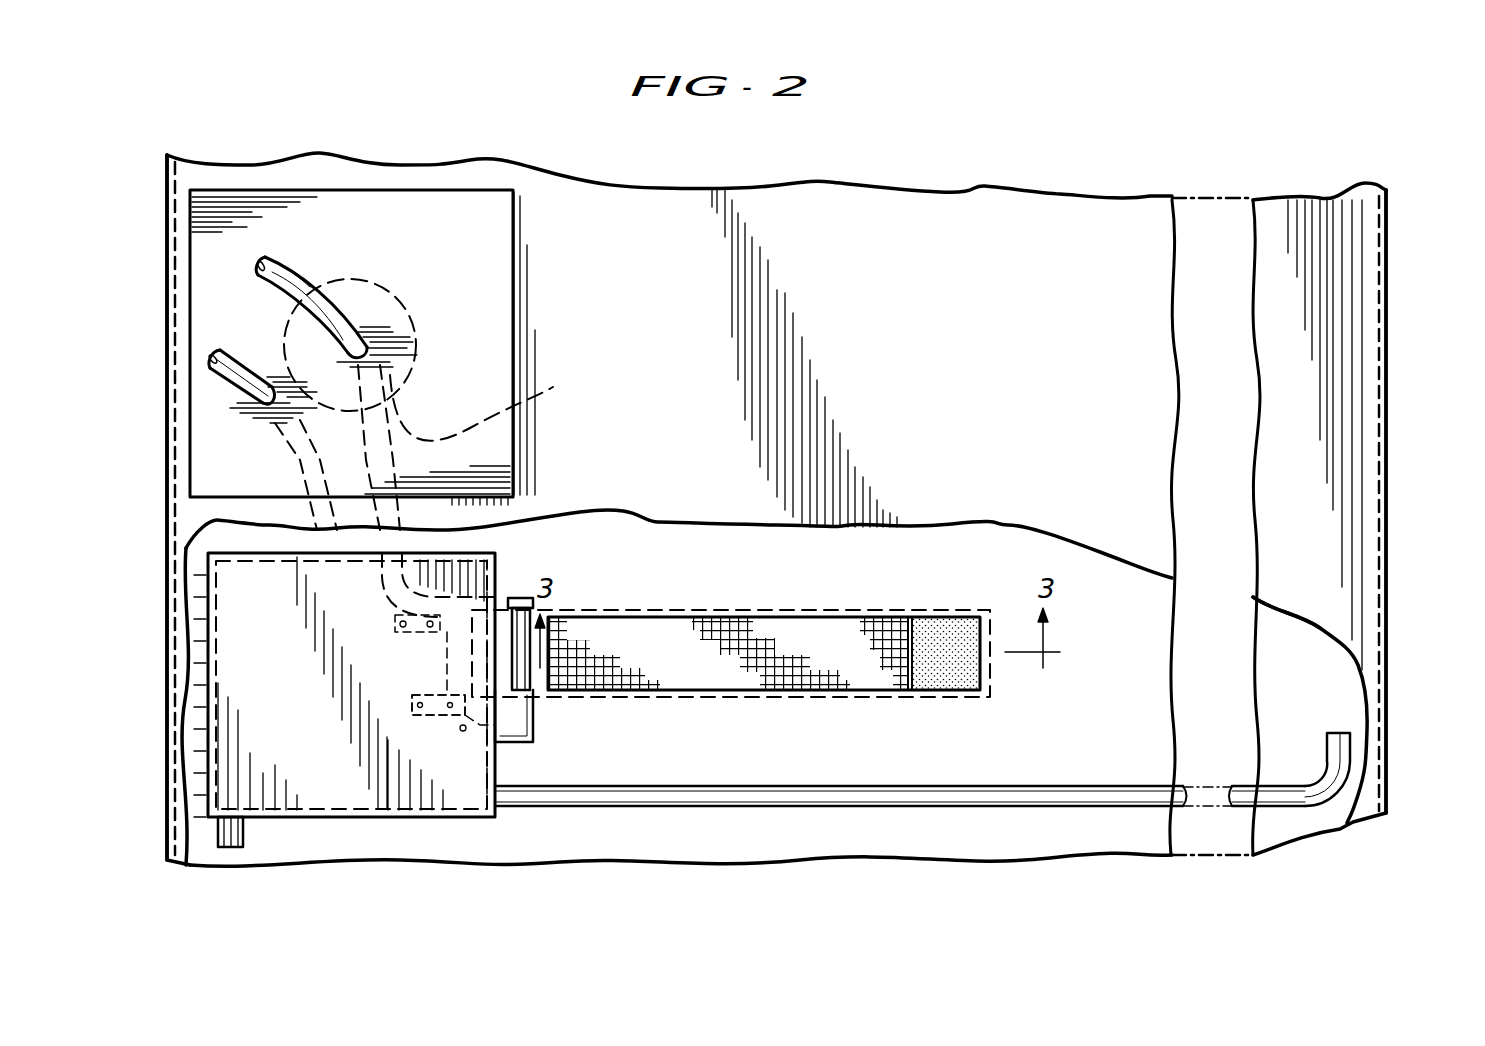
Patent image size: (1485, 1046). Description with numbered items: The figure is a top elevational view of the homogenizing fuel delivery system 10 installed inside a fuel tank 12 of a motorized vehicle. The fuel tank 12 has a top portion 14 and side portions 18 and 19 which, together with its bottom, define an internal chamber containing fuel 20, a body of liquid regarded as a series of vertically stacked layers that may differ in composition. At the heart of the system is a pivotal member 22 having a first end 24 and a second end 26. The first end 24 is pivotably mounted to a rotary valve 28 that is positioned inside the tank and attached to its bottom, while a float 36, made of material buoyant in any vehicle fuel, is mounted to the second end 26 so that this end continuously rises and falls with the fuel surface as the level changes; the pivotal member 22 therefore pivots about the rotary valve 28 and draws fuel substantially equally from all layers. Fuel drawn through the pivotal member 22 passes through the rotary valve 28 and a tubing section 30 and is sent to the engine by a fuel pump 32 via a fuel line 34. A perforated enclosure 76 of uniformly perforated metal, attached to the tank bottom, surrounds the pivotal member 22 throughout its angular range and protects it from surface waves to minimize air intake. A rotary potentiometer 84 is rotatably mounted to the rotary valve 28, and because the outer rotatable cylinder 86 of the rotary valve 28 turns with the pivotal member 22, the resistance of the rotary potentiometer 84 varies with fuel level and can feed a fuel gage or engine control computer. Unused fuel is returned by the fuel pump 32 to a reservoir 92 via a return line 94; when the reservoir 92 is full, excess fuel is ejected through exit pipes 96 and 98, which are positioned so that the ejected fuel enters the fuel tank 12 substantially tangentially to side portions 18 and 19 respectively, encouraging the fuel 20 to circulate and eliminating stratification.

The homogenizing fuel delivery system 10 is at (557, 812).
The fuel tank 12 is at (1391, 510).
The top portion 14 is at (1047, 213).
The side portion 18 is at (166, 562).
The side portion 19 is at (1387, 622).
The fuel 20 is at (1343, 691).
The pivotal member 22 is at (737, 695).
The first end 24 is at (568, 692).
The second end 26 is at (897, 692).
The rotary valve 28 is at (518, 598).
The tubing section 30 is at (540, 392).
The fuel pump 32 is at (403, 297).
The fuel line 34 is at (300, 284).
The float 36 is at (968, 612).
The perforated enclosure 76 is at (720, 612).
The rotary potentiometer 84 is at (462, 730).
The outer rotatable cylinder 86 is at (440, 690).
The reservoir 92 is at (245, 695).
The return line 94 is at (214, 373).
The exit pipe 96 is at (228, 836).
The exit pipe 98 is at (1338, 759).